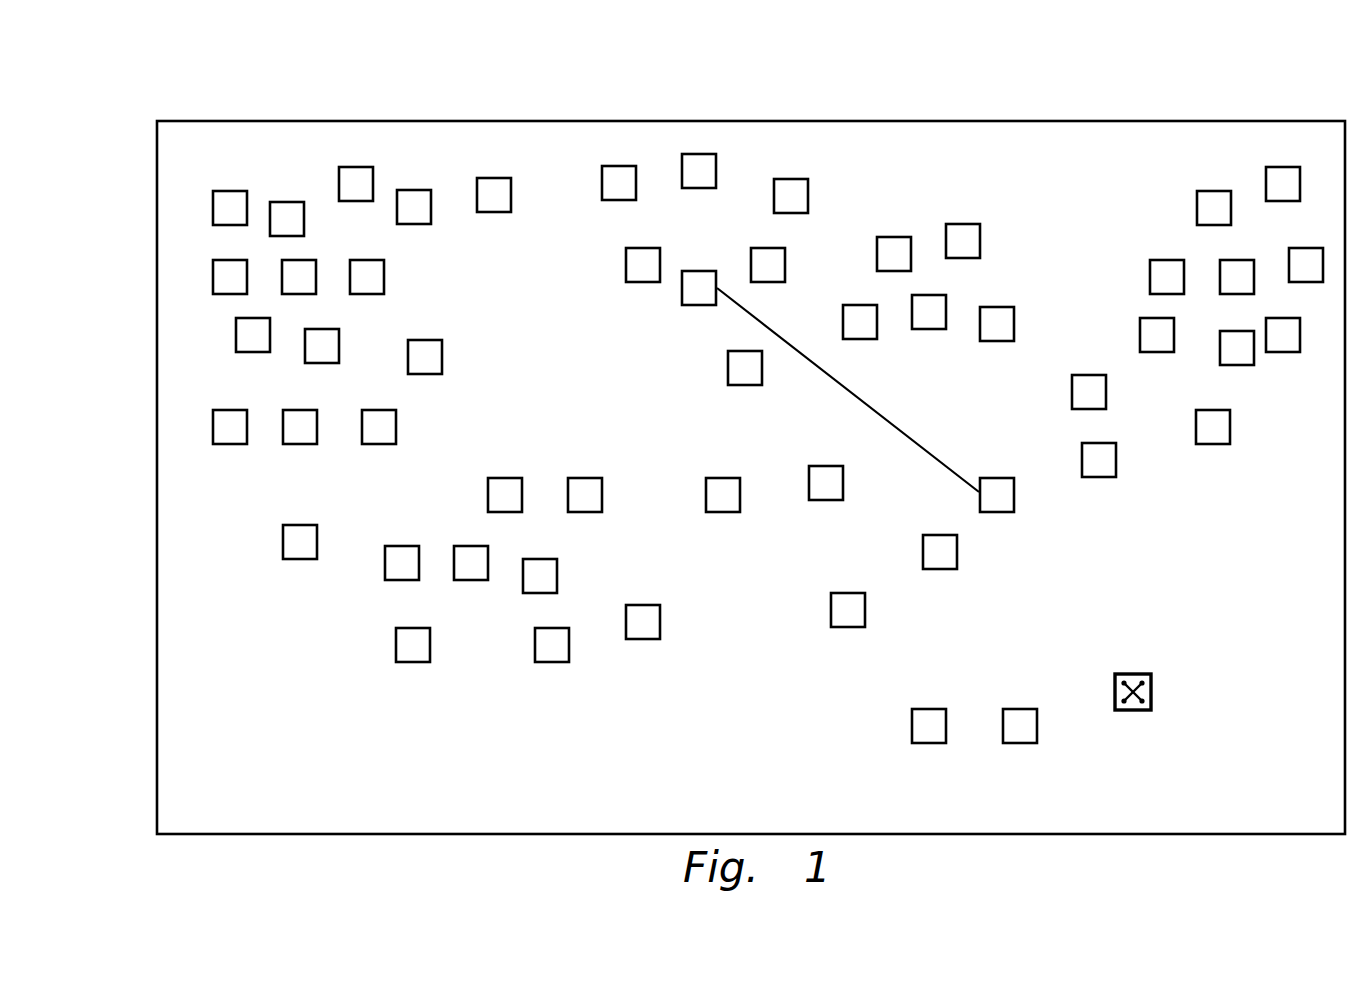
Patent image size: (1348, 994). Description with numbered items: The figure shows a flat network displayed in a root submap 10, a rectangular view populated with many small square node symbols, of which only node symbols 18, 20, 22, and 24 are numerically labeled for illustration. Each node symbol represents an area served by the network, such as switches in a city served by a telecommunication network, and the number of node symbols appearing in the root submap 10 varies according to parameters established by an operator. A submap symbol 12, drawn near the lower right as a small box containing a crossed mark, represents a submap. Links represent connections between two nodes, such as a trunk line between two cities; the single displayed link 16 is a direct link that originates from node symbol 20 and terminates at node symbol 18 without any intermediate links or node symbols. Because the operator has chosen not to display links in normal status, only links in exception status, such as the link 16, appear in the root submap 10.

The root submap 10 is at (1270, 79).
The submap symbol 12 is at (1152, 690).
The link 16 is at (850, 393).
The node symbol 18 is at (997, 477).
The node symbol 20 is at (700, 270).
The node symbol 22 is at (587, 477).
The node symbol 24 is at (1093, 372).